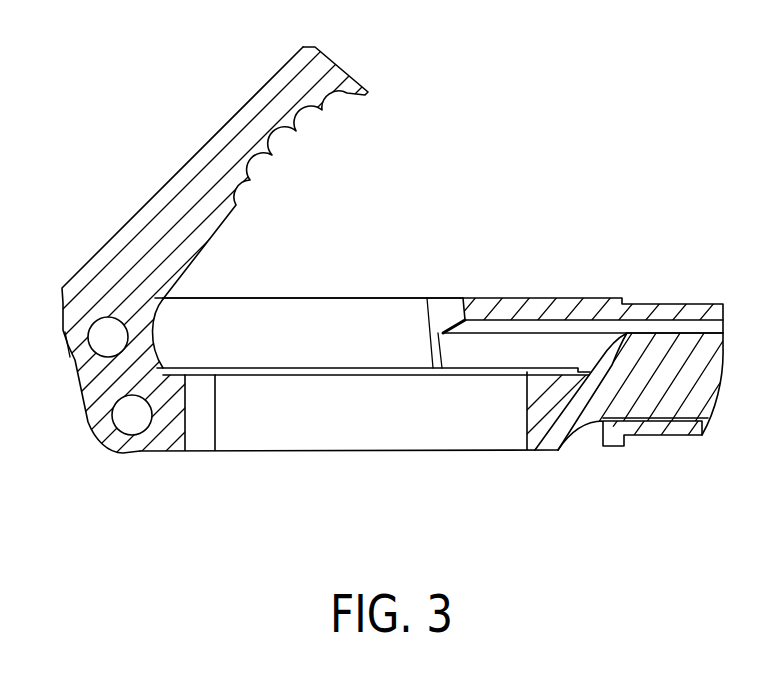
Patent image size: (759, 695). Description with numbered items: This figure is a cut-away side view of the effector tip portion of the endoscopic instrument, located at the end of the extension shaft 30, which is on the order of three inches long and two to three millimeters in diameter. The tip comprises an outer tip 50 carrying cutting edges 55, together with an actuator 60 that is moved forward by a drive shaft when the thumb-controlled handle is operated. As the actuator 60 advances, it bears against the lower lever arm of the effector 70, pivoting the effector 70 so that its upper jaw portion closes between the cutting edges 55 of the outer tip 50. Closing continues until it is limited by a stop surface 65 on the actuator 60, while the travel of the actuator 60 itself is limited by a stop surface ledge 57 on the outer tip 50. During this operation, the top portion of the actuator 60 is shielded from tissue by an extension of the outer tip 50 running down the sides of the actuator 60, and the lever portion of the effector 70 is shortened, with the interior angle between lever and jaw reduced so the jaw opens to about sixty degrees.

The extension shaft 30 is at (673, 303).
The outer tip 50 is at (373, 340).
The cutting edges 55 is at (240, 293).
The stop surface ledge 57 is at (287, 368).
The actuator 60 is at (273, 415).
The stop surface 65 is at (373, 378).
The effector 70 is at (135, 268).